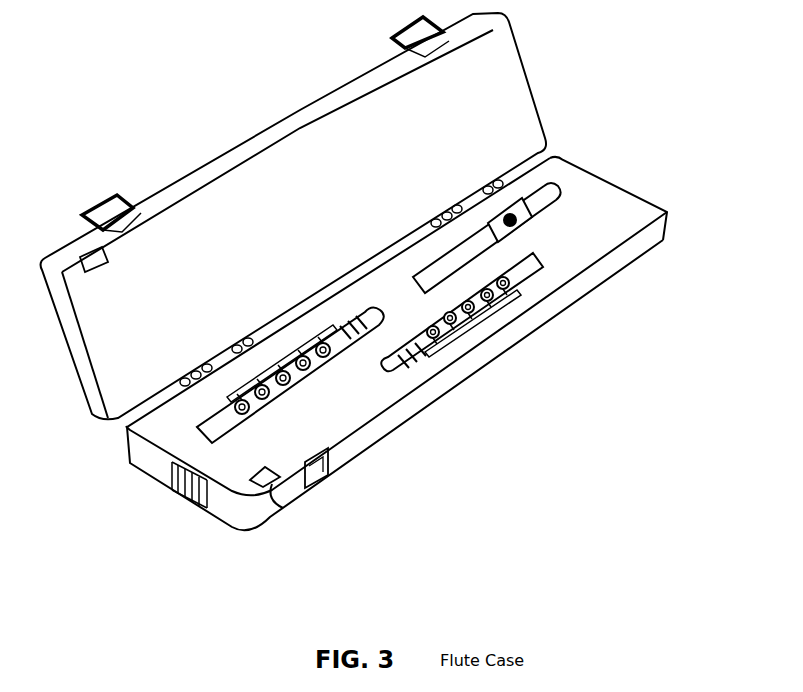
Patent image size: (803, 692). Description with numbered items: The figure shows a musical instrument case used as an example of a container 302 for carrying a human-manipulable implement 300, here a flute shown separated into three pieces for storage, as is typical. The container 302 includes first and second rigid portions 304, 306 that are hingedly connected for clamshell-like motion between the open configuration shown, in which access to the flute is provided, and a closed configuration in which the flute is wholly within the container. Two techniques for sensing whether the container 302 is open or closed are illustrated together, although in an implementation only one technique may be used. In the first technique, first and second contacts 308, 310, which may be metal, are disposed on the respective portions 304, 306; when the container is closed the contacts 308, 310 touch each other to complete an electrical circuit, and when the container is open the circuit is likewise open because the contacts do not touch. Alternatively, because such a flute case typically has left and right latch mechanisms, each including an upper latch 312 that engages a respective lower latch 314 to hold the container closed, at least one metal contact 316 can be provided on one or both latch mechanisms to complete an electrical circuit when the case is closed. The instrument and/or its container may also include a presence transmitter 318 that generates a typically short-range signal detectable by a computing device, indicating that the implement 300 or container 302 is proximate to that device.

The human-manipulable implement 300 is at (547, 258).
The container 302 is at (376, 293).
The first rigid portion 304 is at (311, 216).
The second rigid portion 306 is at (418, 365).
The first contact 308 is at (100, 270).
The second contact 310 is at (270, 481).
The upper latch 312 is at (128, 205).
The lower latch 314 is at (328, 474).
The metal contact 316 is at (140, 213).
The presence transmitter 318 is at (210, 510).